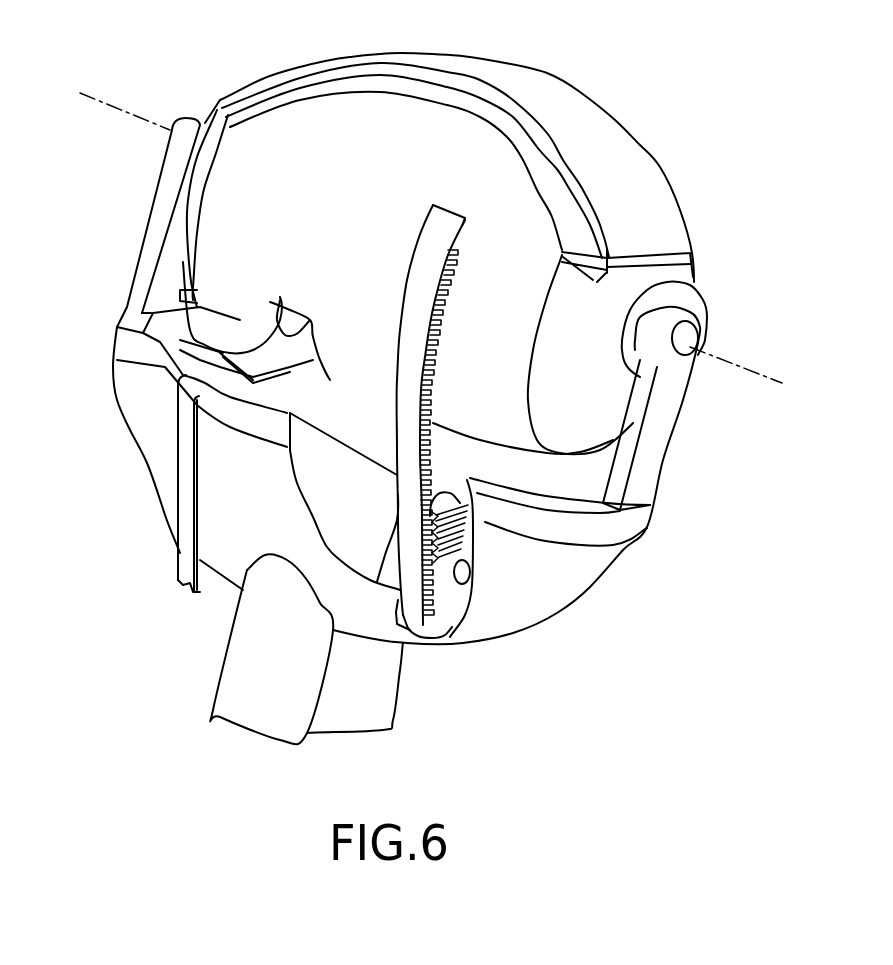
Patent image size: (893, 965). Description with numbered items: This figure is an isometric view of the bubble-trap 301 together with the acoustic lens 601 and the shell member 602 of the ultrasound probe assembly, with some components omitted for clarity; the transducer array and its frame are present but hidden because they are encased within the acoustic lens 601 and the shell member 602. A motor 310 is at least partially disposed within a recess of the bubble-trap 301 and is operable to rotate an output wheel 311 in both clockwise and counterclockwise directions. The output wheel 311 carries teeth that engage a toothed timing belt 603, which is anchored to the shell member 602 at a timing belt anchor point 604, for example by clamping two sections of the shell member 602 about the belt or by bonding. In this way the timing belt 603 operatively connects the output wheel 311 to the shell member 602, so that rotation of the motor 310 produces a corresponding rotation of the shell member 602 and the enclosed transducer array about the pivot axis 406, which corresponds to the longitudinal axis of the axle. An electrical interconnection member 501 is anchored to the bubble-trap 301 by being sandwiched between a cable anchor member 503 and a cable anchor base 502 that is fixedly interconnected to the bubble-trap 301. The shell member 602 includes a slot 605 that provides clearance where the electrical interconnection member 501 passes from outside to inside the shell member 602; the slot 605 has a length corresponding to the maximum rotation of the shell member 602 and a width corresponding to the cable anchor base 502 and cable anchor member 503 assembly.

The bubble-trap 301 is at (517, 633).
The motor 310 is at (397, 613).
The output wheel 311 is at (457, 590).
The pivot axis 406 is at (133, 113).
The electrical interconnection member 501 is at (180, 562).
The cable anchor base 502 is at (277, 390).
The cable anchor member 503 is at (167, 338).
The acoustic lens 601 is at (662, 168).
The shell member 602 is at (380, 113).
The timing belt 603 is at (433, 460).
The timing belt anchor point 604 is at (460, 213).
The slot 605 is at (282, 297).